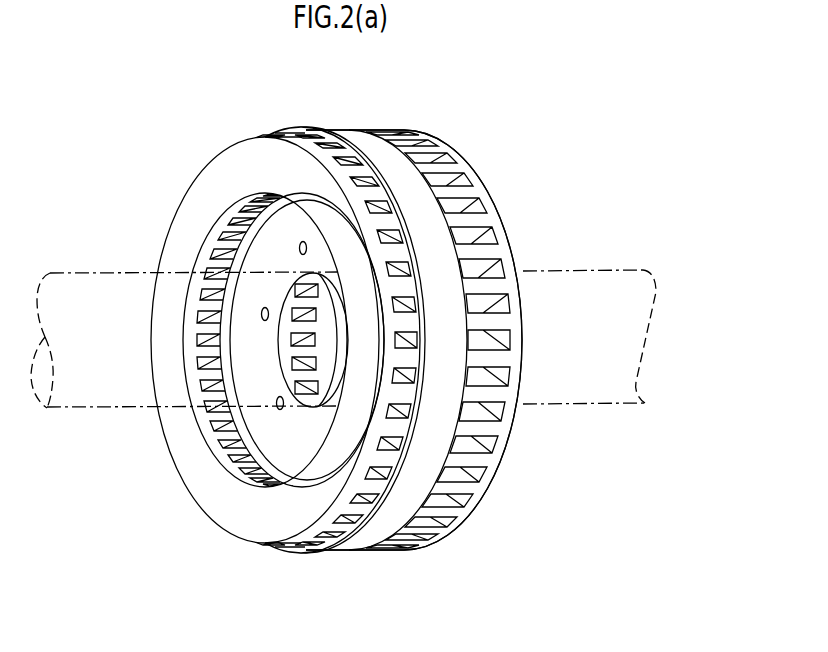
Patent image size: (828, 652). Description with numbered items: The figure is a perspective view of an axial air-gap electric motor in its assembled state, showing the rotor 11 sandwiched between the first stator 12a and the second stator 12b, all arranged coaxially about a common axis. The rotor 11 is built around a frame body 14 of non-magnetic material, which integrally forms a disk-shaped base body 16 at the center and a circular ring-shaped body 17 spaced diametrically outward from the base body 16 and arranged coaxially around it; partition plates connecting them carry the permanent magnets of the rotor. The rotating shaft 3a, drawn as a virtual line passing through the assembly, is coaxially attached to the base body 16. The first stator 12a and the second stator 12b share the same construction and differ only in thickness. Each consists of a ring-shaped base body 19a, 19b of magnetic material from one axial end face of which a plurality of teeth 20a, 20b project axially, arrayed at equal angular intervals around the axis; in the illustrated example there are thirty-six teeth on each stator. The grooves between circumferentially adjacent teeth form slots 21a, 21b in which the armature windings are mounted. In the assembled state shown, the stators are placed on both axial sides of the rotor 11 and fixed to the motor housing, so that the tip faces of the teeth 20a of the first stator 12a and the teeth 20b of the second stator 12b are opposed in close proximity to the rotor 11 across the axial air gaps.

The rotating shaft 3a is at (77, 407).
The rotor 11 is at (338, 120).
The first stator 12a is at (469, 160).
The second stator 12b is at (232, 140).
The frame body 14 is at (343, 552).
The base body 16 is at (290, 438).
The ring-shaped body 17 is at (397, 165).
The base body of first stator 19a is at (500, 447).
The base body of second stator 19b is at (243, 512).
The teeth of first stator 20a is at (503, 355).
The teeth of second stator 20b is at (325, 128).
The slot of first stator 21a is at (477, 237).
The slot of second stator 21b is at (360, 165).